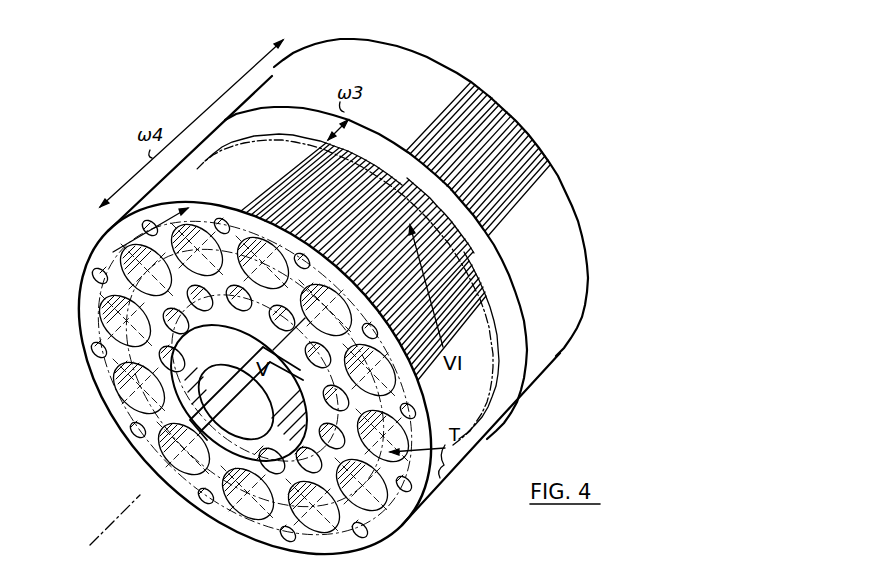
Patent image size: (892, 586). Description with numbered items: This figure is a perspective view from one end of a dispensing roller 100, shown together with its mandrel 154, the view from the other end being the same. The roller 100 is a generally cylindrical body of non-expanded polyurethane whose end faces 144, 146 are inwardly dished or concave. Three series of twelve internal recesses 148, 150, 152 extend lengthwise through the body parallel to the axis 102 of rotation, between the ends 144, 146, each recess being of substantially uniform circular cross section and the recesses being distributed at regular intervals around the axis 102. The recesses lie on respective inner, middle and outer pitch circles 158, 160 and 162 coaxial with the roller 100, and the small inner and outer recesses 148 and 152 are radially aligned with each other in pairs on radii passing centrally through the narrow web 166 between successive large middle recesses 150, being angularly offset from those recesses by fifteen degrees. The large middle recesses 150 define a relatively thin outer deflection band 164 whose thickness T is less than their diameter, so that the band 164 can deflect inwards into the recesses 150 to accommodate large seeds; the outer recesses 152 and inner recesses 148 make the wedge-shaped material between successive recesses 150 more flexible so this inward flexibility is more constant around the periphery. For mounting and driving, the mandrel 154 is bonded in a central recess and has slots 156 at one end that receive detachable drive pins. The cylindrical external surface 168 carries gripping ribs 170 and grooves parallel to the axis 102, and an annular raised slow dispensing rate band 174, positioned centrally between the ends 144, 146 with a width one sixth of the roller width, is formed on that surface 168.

The dispensing roller 100 is at (520, 422).
The axis of rotation 102 is at (142, 490).
The end face 144 is at (120, 257).
The end face 146 is at (370, 38).
The inner recess 148 is at (90, 357).
The middle recess 150 is at (105, 325).
The outer recess 152 is at (223, 379).
The mandrel 154 is at (239, 415).
The slot 156 is at (205, 356).
The inner pitch circle 158 is at (246, 520).
The middle pitch circle 160 is at (350, 545).
The outer pitch circle 162 is at (398, 530).
The outer deflection band 164 is at (433, 472).
The web 166 is at (133, 434).
The circumferential external surface 168 is at (548, 352).
The rib 170 is at (545, 150).
The slow dispensing rate band 174 is at (520, 290).